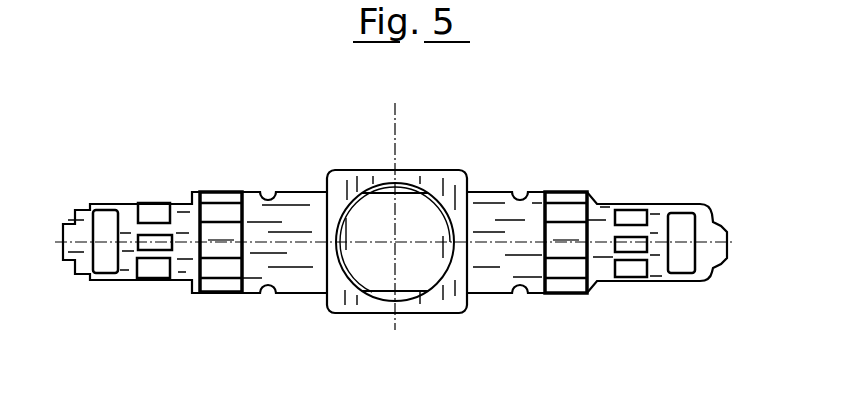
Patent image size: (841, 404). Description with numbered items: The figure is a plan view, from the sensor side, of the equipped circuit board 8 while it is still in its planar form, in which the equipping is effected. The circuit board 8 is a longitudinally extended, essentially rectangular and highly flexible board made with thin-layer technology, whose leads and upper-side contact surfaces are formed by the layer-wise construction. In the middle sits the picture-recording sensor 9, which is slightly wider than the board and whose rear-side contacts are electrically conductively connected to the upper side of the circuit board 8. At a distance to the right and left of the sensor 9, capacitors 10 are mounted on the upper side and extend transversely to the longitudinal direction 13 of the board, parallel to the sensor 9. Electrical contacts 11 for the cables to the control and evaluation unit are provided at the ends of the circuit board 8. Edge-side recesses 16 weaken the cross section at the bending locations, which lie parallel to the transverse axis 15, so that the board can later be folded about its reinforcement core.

The circuit board 8 is at (510, 276).
The picture-recording sensor 9 is at (453, 195).
The capacitors 10 is at (216, 276).
The electrical contacts 11 is at (103, 214).
The longitudinal direction 13 is at (724, 236).
The transverse axis 15 is at (395, 142).
The edge-side recesses 16 is at (270, 197).